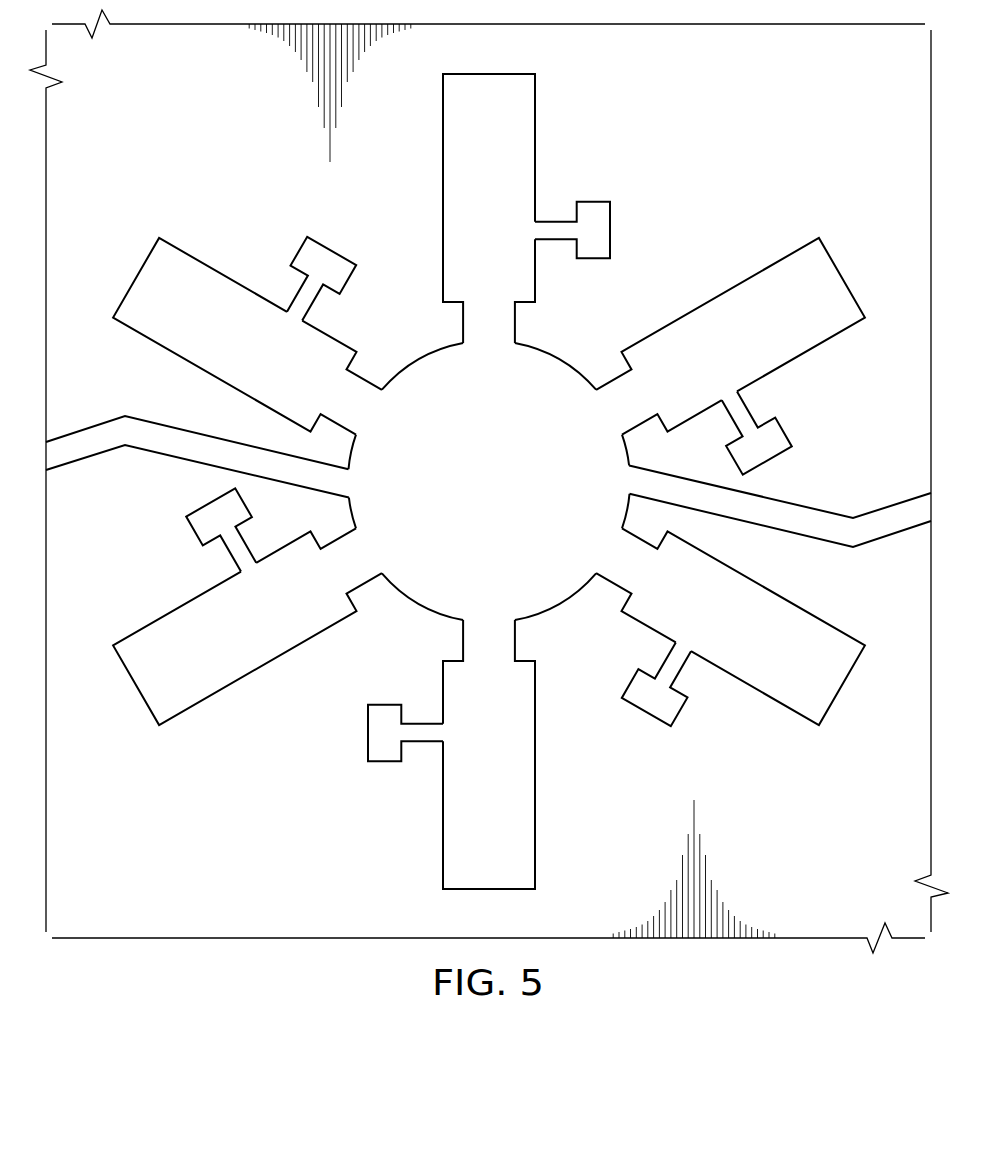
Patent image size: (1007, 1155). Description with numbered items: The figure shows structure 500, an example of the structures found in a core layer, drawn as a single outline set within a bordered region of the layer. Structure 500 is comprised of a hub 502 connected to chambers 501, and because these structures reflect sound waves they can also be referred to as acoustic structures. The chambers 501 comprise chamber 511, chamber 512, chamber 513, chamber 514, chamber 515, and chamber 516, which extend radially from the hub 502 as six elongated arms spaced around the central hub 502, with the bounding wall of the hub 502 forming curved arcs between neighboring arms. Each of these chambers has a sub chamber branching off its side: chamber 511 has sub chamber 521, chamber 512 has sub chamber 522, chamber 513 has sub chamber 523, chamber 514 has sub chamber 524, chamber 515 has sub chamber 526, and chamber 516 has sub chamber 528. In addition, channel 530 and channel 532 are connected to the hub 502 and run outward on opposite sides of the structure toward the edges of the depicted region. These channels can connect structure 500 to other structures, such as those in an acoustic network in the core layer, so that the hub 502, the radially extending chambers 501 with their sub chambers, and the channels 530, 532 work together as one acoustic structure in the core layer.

The structure 500 is at (230, 121).
The chambers 501 is at (135, 375).
The hub 502 is at (438, 370).
The chamber 511 is at (443, 185).
The chamber 512 is at (843, 274).
The chamber 513 is at (843, 689).
The chamber 514 is at (535, 796).
The chamber 515 is at (135, 688).
The chamber 516 is at (137, 277).
The sub chamber 521 is at (612, 224).
The sub chamber 522 is at (790, 437).
The sub chamber 523 is at (675, 712).
The sub chamber 524 is at (366, 736).
The sub chamber 526 is at (190, 526).
The sub chamber 528 is at (300, 247).
The channel 530 is at (148, 452).
The channel 532 is at (818, 509).